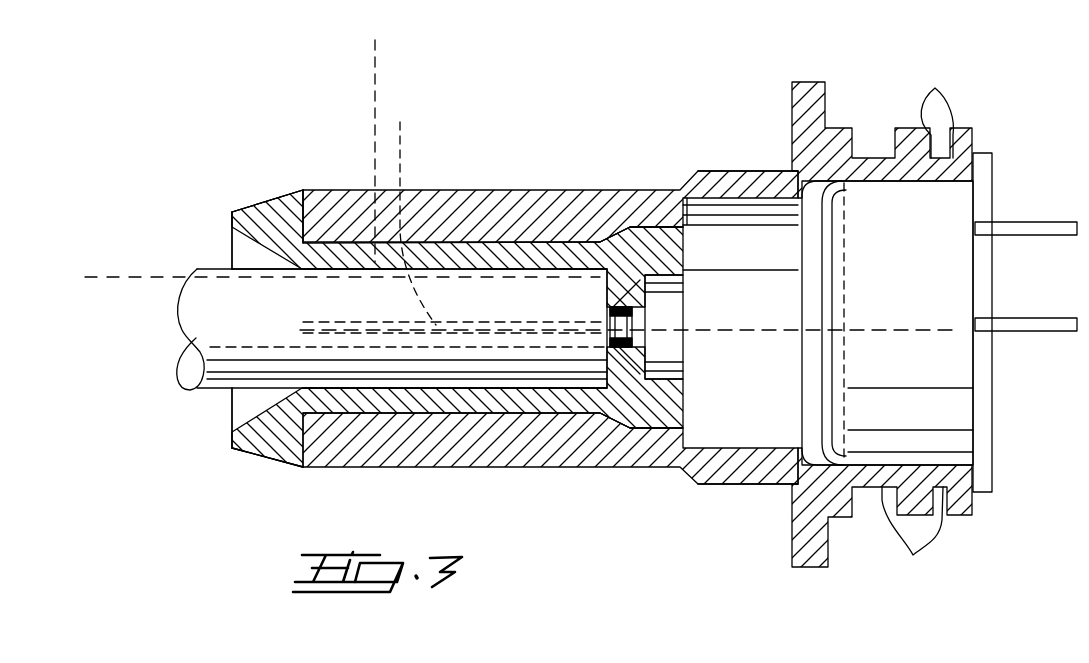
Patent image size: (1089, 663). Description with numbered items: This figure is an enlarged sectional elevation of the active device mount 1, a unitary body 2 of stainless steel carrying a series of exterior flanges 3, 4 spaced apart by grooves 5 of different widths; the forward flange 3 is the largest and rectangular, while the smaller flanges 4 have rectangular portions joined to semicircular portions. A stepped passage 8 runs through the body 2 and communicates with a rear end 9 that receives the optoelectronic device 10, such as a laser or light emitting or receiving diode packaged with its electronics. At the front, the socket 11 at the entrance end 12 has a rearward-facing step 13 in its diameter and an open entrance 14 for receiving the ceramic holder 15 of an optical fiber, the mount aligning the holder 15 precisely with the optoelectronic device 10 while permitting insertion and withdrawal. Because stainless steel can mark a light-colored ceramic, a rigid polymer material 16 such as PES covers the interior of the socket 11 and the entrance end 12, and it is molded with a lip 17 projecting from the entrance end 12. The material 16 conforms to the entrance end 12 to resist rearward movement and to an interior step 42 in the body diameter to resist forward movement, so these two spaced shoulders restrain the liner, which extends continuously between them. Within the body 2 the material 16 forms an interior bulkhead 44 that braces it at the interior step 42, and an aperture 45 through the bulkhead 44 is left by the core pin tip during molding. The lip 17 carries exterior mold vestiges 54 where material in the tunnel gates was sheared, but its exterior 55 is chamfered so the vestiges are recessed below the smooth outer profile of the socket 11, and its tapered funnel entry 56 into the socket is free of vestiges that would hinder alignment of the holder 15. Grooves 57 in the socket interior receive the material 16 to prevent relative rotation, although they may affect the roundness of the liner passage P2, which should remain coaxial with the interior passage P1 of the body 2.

The active device mount 1 is at (548, 148).
The body 2 is at (453, 189).
The forward flange 3 is at (822, 84).
The smaller flanges 4 is at (937, 111).
The grooves 5 is at (912, 538).
The stepped passage 8 is at (930, 232).
The rear end 9 is at (975, 138).
The optoelectronic device 10 is at (955, 282).
The socket 11 is at (232, 245).
The entrance end 12 is at (296, 222).
The step 13 is at (712, 196).
The open entrance 14 is at (235, 403).
The holder 15 is at (195, 300).
The material 16 is at (428, 402).
The lip 17 is at (283, 450).
The interior step 42 is at (618, 228).
The interior bulkhead 44 is at (648, 299).
The aperture 45 is at (609, 318).
The mold vestiges 54 is at (262, 200).
The exterior 55 is at (252, 206).
The funnel entry 56 is at (285, 256).
The grooves 57 is at (413, 211).
The interior passage P1 is at (485, 258).
The passage P2 is at (548, 278).